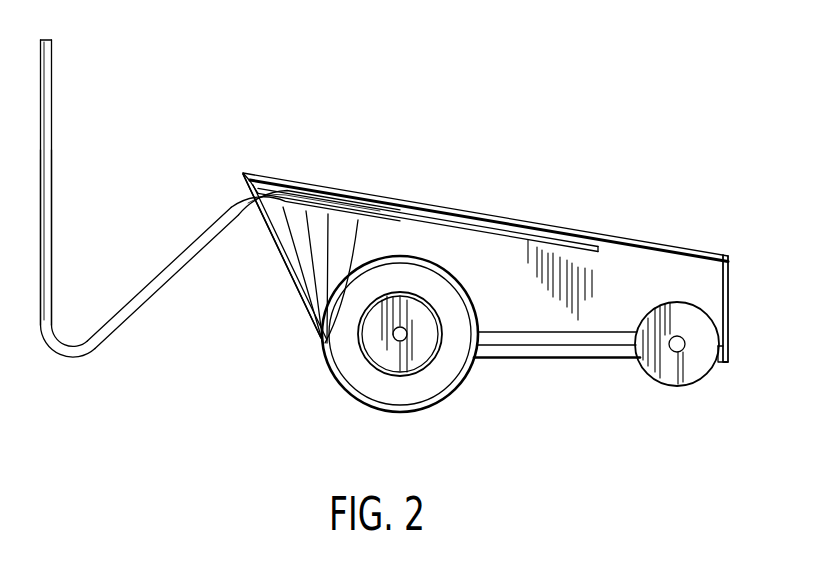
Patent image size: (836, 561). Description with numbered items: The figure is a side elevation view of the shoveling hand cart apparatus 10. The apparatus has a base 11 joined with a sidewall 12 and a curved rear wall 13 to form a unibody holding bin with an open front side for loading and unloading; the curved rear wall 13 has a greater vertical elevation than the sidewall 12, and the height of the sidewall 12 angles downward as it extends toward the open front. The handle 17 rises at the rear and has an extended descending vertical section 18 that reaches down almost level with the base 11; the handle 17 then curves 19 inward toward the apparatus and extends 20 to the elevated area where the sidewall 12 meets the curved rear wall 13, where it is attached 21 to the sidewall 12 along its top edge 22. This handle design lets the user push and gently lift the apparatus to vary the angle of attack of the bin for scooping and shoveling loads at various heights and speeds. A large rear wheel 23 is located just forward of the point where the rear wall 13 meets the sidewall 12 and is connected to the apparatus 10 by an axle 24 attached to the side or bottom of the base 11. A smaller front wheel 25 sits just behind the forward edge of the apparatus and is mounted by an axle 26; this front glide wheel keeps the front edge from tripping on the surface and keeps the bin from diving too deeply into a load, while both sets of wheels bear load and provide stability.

The shoveling hand cart apparatus 10 is at (330, 124).
The base 11 is at (728, 289).
The sidewall 12 is at (615, 270).
The curved rear wall 13 is at (282, 262).
The handle 17 is at (52, 105).
The extended descending vertical section 18 is at (52, 248).
The handle curve 19 is at (131, 326).
The handle extension 20 is at (198, 262).
The handle attachment 21 is at (368, 262).
The top edge of sidewall 22 is at (463, 214).
The large rear wheel 23 is at (413, 388).
The axle 24 is at (396, 339).
The smaller front wheel 25 is at (697, 388).
The front axle 26 is at (686, 344).